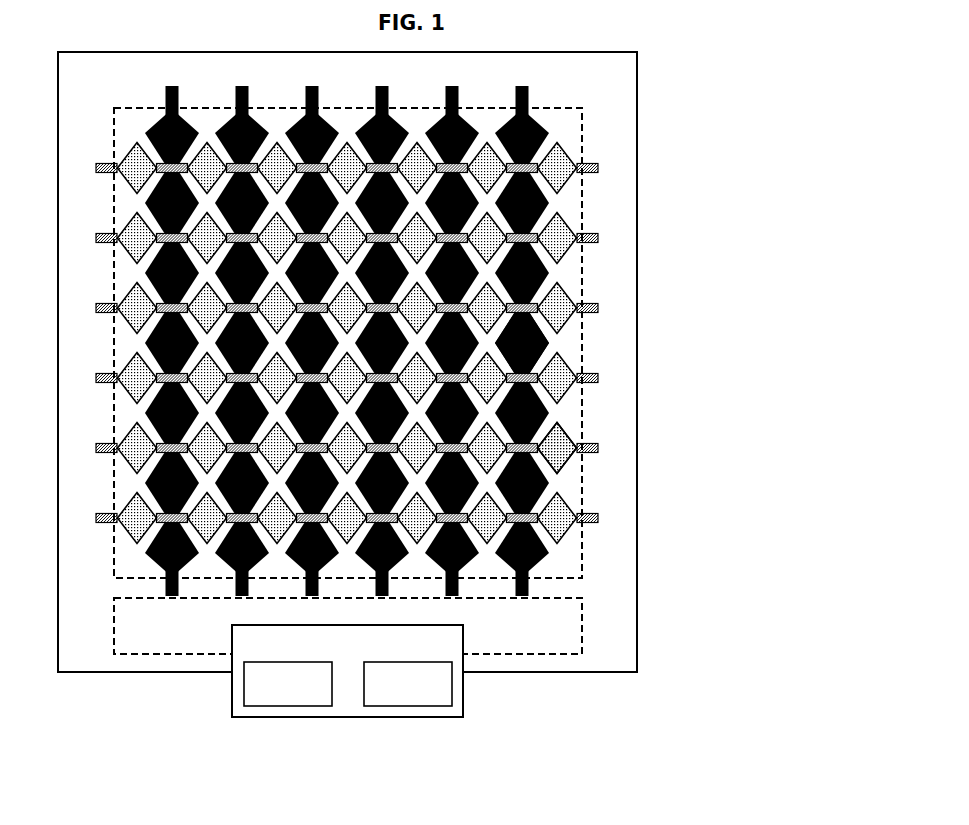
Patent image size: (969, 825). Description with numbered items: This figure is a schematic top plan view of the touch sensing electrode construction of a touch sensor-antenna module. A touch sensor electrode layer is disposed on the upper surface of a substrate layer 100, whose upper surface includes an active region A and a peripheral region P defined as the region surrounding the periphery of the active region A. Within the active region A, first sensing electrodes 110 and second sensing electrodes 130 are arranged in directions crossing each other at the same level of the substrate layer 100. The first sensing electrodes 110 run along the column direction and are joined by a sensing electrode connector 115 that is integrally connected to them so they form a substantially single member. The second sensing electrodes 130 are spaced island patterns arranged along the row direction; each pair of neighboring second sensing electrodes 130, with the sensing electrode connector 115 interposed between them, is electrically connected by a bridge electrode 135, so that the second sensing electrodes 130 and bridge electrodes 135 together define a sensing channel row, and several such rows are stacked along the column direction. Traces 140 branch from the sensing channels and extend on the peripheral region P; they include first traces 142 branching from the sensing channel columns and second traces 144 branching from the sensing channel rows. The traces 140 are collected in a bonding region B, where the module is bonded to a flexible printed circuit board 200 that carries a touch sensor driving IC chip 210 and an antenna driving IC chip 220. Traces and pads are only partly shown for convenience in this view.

The substrate layer 100 is at (628, 650).
The first sensing electrodes 110 is at (548, 550).
The sensing electrode connector 115 is at (557, 453).
The second sensing electrodes 130 is at (563, 362).
The bridge electrode 135 is at (429, 343).
The traces 140 is at (465, 345).
The first traces 142 is at (530, 582).
The second traces 144 is at (599, 237).
The flexible printed circuit board 200 is at (232, 700).
The touch sensor driving IC chip 210 is at (285, 697).
The antenna driving IC chip 220 is at (405, 697).
The active region A is at (586, 132).
The bonding region B is at (588, 617).
The peripheral region P is at (616, 333).